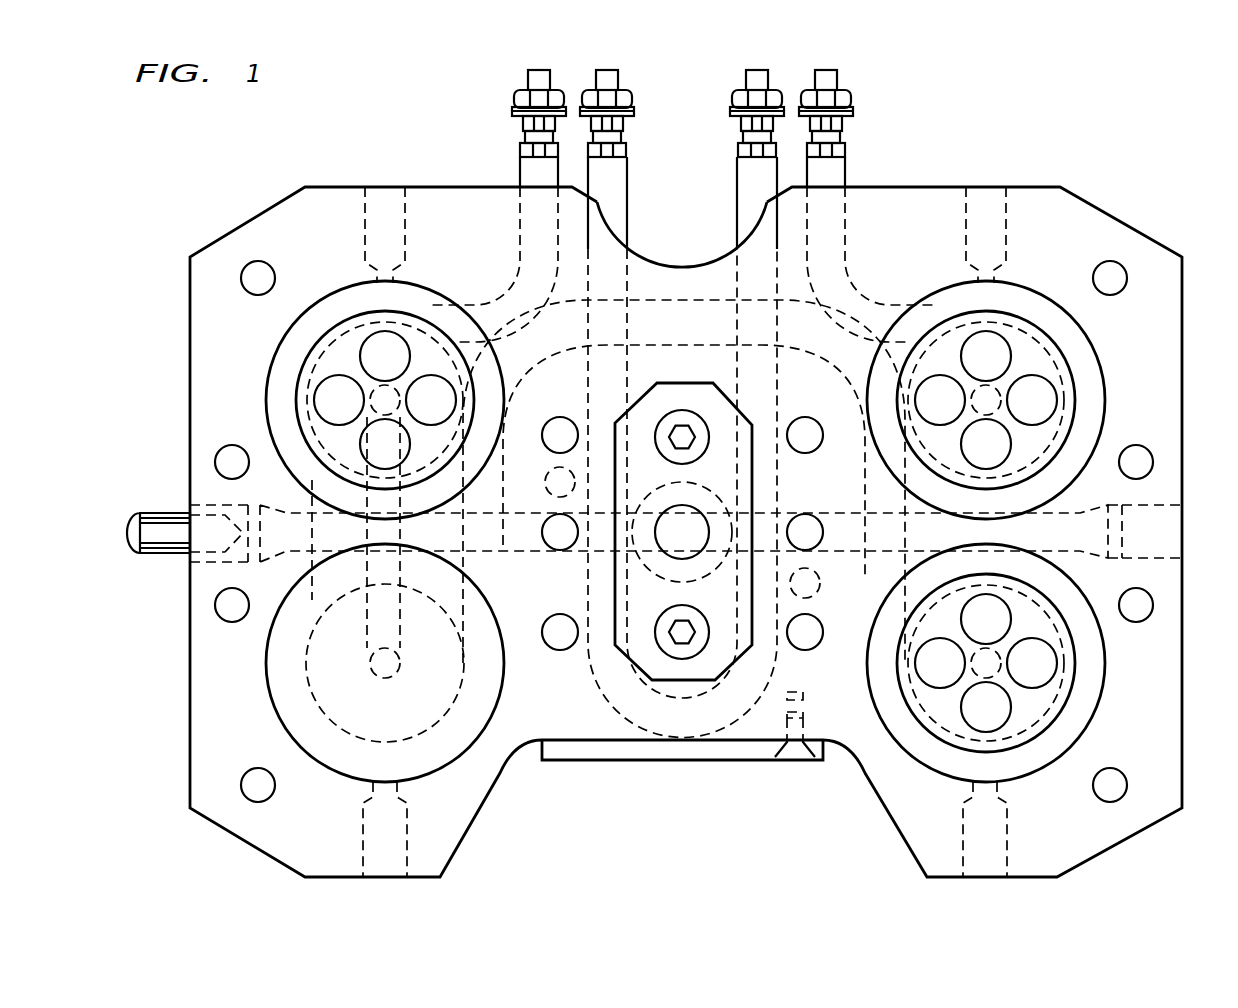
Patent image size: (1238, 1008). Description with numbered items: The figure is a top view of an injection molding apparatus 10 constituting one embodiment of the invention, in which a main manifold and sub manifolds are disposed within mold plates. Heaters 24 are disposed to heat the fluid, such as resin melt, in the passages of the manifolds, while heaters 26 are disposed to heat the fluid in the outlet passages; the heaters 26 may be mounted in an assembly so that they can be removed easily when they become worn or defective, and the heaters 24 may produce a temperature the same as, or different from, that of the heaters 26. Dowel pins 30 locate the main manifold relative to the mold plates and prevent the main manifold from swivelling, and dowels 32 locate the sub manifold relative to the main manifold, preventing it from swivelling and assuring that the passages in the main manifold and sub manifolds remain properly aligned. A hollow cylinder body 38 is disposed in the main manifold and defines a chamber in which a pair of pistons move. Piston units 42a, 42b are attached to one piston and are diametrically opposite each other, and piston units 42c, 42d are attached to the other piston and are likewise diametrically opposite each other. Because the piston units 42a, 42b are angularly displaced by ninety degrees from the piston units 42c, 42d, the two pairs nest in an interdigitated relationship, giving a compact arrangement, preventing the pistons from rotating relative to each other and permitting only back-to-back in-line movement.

The apparatus 10 is at (1110, 185).
The heaters 24 is at (743, 216).
The heaters 26 is at (520, 168).
The dowel pins 30 is at (162, 525).
The dowels 32 is at (545, 481).
The cylinder body 38 is at (452, 308).
The piston unit 42a is at (325, 403).
The piston unit 42b is at (430, 400).
The piston unit 42c is at (373, 358).
The piston unit 42d is at (373, 450).